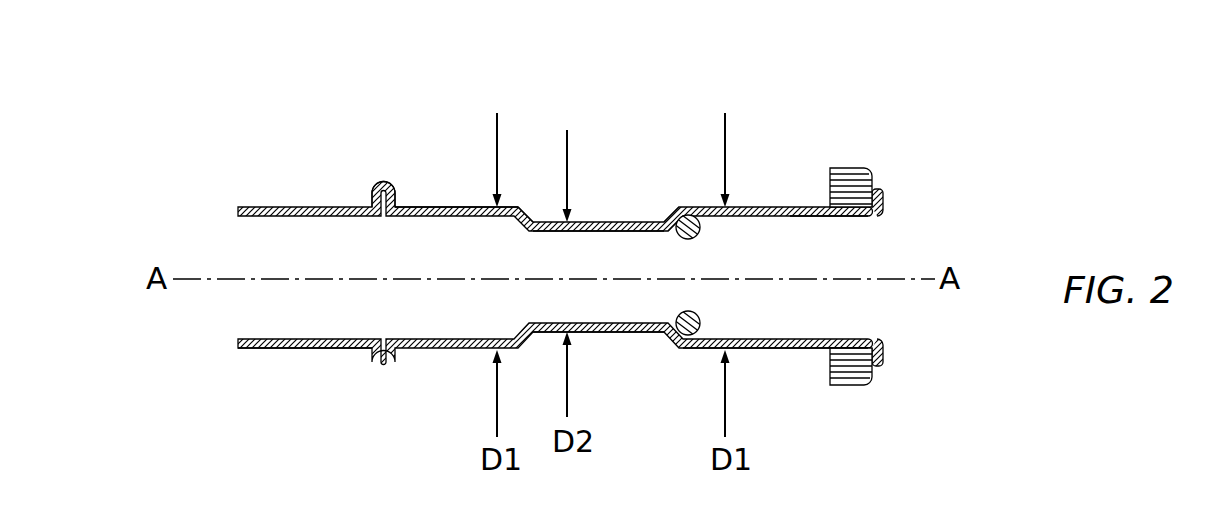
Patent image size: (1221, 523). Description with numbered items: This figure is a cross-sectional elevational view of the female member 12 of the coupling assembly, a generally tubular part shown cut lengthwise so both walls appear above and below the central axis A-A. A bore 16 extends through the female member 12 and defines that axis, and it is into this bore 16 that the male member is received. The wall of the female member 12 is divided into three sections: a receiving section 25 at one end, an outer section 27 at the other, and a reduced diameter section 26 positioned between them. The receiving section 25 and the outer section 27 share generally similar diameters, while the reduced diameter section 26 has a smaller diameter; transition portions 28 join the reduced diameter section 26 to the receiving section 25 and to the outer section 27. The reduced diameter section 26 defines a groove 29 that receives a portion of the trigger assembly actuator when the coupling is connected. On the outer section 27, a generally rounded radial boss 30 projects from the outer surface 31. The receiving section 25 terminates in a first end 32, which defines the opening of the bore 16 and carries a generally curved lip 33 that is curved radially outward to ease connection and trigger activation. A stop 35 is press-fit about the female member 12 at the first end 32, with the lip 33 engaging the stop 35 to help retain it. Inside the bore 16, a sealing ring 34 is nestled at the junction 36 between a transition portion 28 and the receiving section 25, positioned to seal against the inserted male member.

The female member 12 is at (806, 115).
The bore 16 is at (230, 250).
The receiving section 25 is at (752, 358).
The reduced diameter section 26 is at (594, 341).
The outer section 27 is at (292, 358).
The transition portions 28 is at (534, 217).
The groove 29 is at (590, 222).
The radial boss 30 is at (381, 182).
The outer surface 31 is at (417, 200).
The first end 32 is at (851, 226).
The lip 33 is at (886, 196).
The sealing ring 34 is at (699, 237).
The stop 35 is at (843, 175).
The junction 36 is at (683, 214).